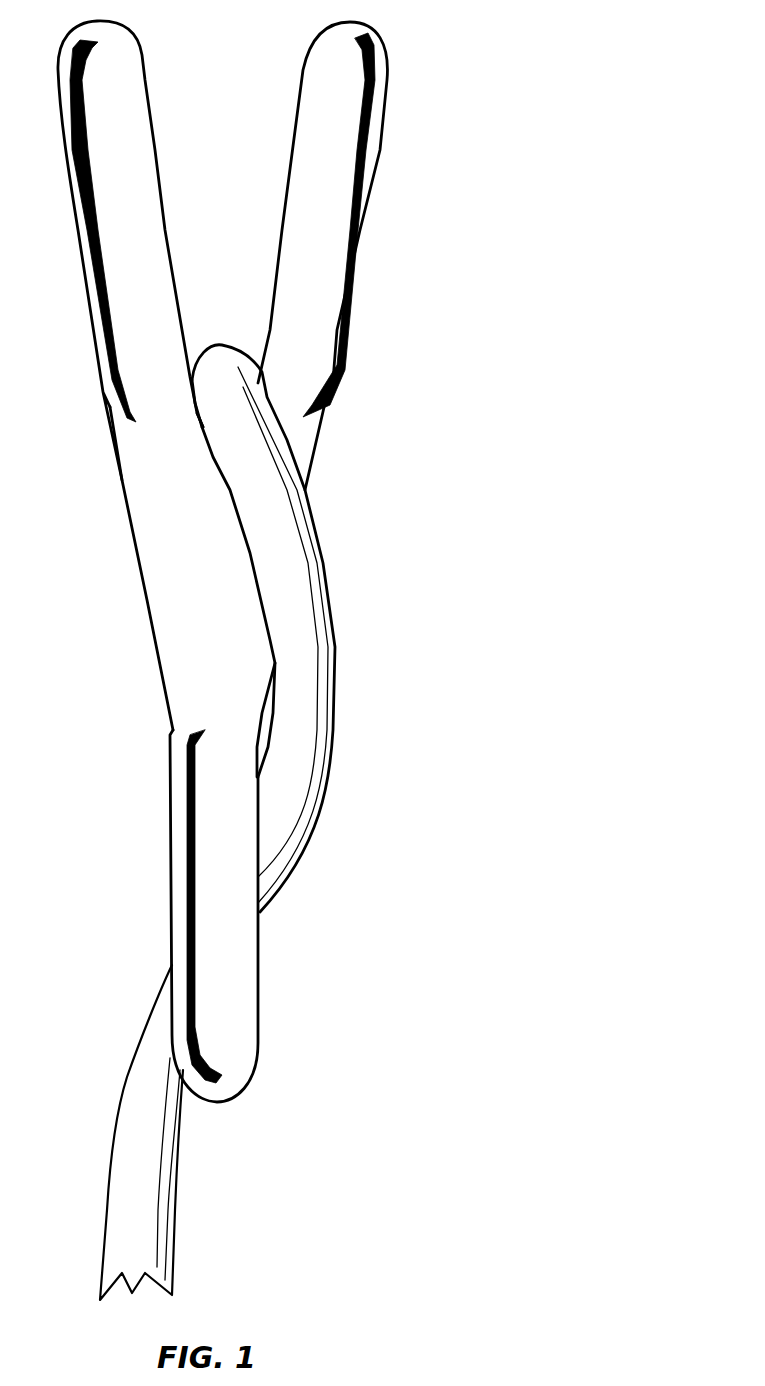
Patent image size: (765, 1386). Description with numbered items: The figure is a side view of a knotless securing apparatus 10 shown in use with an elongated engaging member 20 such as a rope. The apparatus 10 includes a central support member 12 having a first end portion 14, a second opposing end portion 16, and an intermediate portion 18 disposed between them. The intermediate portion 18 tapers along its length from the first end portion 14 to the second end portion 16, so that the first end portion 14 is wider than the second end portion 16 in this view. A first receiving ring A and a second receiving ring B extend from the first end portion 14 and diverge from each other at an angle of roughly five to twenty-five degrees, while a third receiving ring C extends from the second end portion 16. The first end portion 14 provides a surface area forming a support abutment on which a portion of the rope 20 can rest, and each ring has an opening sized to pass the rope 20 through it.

The knotless securing apparatus 10 is at (473, 154).
The central support member 12 is at (147, 600).
The first end portion 14 is at (203, 427).
The second opposing end portion 16 is at (170, 730).
The intermediate portion 18 is at (263, 628).
The elongated engaging member 20 is at (310, 612).